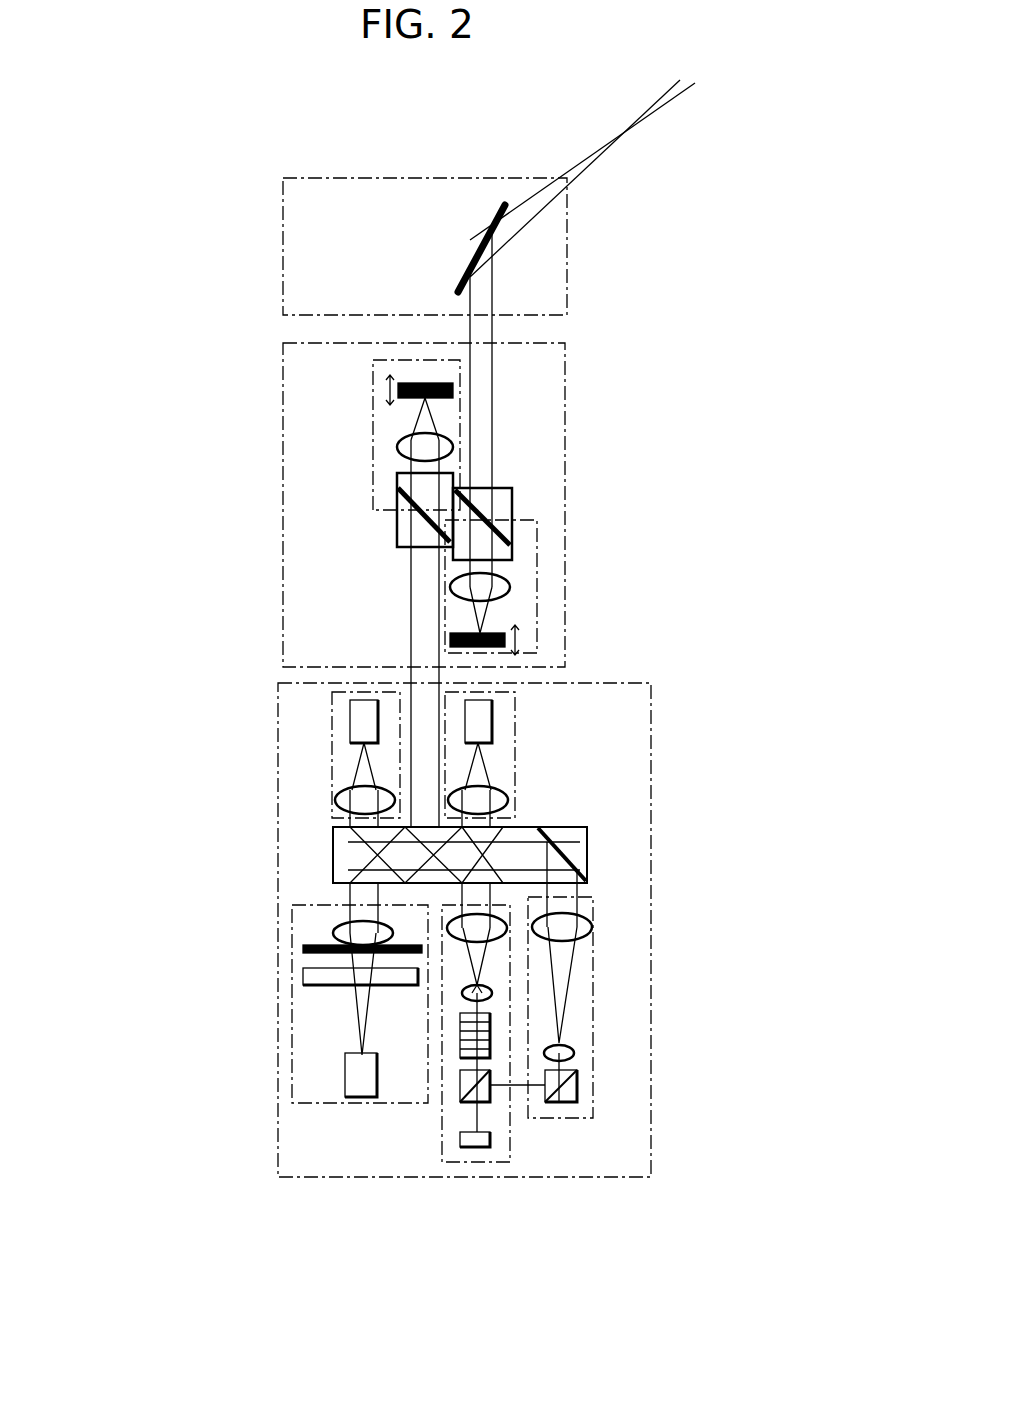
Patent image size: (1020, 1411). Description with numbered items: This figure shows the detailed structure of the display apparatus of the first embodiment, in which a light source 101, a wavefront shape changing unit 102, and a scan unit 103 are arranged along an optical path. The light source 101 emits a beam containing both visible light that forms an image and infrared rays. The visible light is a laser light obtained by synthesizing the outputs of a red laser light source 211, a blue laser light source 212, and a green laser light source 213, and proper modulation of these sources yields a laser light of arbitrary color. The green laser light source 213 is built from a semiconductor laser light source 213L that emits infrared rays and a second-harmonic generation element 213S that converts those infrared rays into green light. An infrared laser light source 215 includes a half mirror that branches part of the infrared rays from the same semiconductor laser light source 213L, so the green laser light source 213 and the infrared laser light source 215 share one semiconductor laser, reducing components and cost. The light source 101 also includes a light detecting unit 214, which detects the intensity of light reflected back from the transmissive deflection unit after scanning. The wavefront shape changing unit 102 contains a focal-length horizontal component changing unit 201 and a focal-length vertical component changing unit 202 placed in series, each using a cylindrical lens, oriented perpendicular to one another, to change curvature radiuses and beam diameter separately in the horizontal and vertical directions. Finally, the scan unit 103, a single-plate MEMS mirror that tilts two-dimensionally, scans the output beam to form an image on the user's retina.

The light source 101 is at (278, 735).
The wavefront shape changing unit 102 is at (282, 402).
The scan unit 103 is at (282, 240).
The focal-length horizontal component changing unit 201 is at (462, 415).
The focal-length vertical component changing unit 202 is at (537, 598).
The red laser light source 211 is at (330, 758).
The blue laser light source 212 is at (517, 763).
The green laser light source 213 is at (427, 1100).
The second-harmonic generation element 213S is at (460, 1042).
The semiconductor laser light source 213L is at (460, 1140).
The light detecting unit 214 is at (292, 965).
The infrared laser light source 215 is at (595, 980).